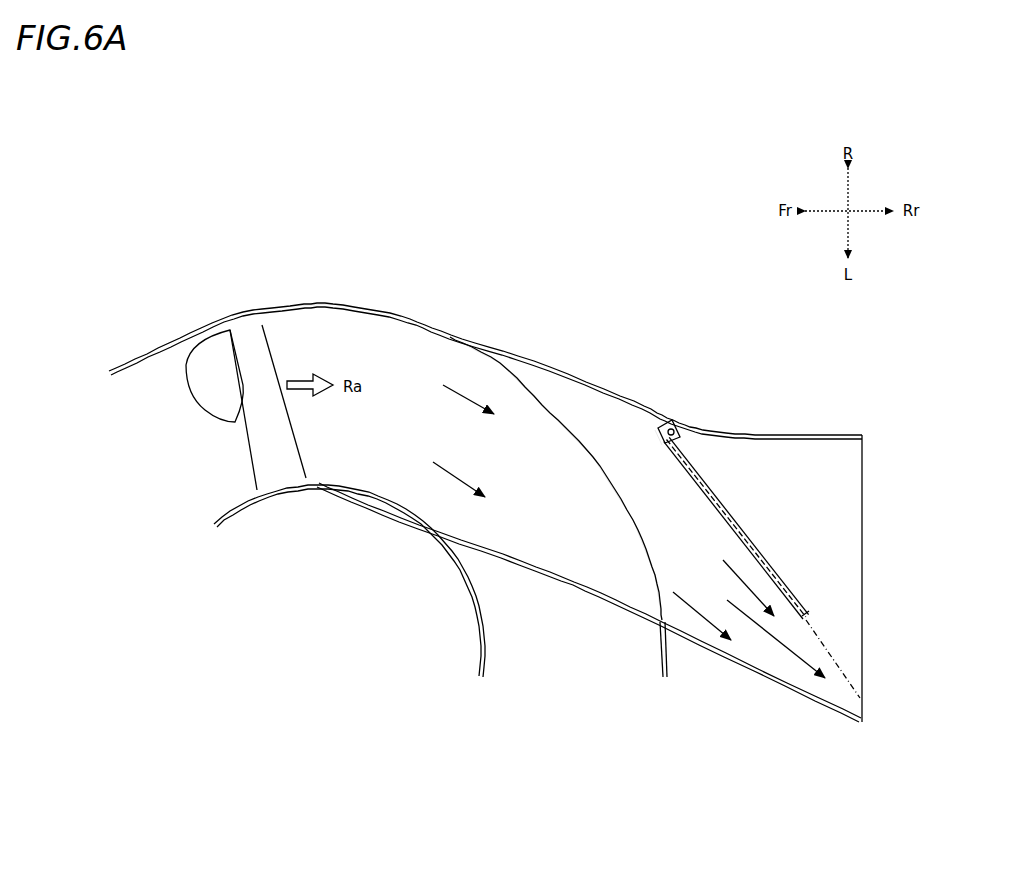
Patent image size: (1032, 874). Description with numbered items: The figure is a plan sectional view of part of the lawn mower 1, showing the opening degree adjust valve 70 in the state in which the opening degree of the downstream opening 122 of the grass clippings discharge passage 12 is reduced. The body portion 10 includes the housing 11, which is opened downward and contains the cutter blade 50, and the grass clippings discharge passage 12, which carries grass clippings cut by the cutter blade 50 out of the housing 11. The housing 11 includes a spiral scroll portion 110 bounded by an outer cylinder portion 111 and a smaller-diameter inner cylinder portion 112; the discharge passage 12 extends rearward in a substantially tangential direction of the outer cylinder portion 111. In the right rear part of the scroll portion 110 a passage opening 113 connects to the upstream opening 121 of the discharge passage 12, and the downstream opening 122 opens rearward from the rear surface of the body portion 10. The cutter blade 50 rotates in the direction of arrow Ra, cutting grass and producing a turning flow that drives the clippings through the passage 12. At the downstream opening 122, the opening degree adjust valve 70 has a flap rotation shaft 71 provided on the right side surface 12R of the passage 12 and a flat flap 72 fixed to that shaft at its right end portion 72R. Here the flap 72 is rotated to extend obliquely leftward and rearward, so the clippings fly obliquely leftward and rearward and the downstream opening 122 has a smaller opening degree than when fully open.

The lawn mower 1 is at (70, 297).
The body portion 10 is at (146, 346).
The housing 11 is at (146, 393).
The grass clippings discharge passage 12 is at (830, 533).
The right side surface of the grass clippings discharge passage 12R is at (713, 428).
The cutter blade 50 is at (247, 337).
The opening degree adjust valve 70 is at (737, 525).
The flap rotation shaft 71 is at (672, 421).
The flap 72 is at (770, 573).
The right end portion of the flap 72R is at (652, 436).
The scroll portion 110 is at (333, 333).
The outer cylinder portion 111 is at (181, 331).
The inner cylinder portion 112 is at (217, 517).
The passage opening 113 is at (556, 402).
The upstream opening 121 is at (556, 464).
The downstream opening 122 is at (863, 705).